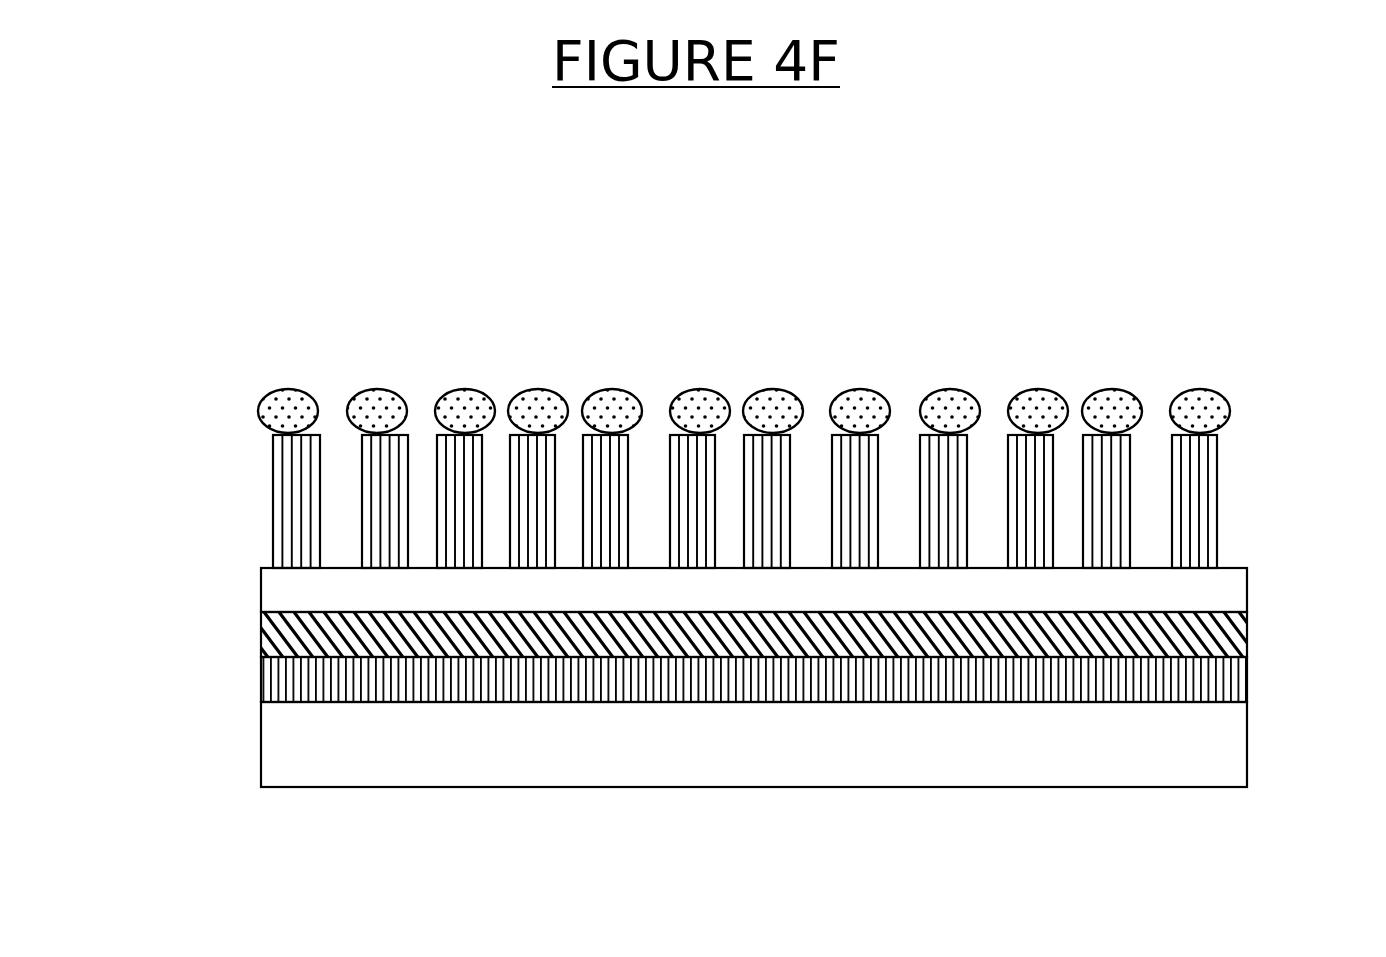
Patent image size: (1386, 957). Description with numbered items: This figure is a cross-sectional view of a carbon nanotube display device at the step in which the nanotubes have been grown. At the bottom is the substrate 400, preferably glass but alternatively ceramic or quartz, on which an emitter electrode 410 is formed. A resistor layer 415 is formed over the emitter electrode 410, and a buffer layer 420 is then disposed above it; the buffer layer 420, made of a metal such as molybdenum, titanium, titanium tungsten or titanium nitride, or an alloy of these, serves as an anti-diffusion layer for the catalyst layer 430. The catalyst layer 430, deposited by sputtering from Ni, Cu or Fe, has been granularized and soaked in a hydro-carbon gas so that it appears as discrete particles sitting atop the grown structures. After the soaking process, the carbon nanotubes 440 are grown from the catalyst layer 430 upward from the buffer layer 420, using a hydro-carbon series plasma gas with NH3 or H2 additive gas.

The substrate 400 is at (643, 787).
The emitter electrode 410 is at (261, 687).
The resistor layer 415 is at (1247, 623).
The buffer layer 420 is at (261, 598).
The catalyst layer 430 is at (1243, 418).
The carbon nanotubes 440 is at (273, 493).